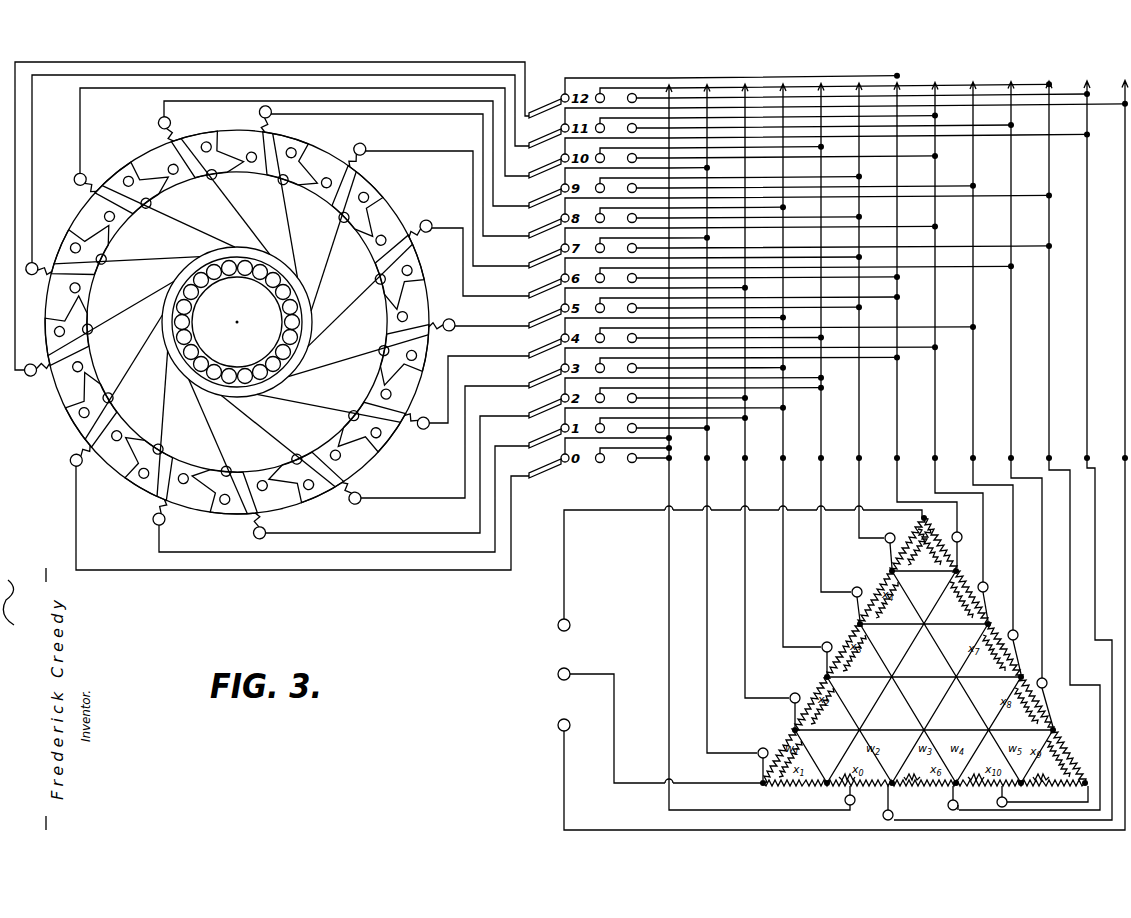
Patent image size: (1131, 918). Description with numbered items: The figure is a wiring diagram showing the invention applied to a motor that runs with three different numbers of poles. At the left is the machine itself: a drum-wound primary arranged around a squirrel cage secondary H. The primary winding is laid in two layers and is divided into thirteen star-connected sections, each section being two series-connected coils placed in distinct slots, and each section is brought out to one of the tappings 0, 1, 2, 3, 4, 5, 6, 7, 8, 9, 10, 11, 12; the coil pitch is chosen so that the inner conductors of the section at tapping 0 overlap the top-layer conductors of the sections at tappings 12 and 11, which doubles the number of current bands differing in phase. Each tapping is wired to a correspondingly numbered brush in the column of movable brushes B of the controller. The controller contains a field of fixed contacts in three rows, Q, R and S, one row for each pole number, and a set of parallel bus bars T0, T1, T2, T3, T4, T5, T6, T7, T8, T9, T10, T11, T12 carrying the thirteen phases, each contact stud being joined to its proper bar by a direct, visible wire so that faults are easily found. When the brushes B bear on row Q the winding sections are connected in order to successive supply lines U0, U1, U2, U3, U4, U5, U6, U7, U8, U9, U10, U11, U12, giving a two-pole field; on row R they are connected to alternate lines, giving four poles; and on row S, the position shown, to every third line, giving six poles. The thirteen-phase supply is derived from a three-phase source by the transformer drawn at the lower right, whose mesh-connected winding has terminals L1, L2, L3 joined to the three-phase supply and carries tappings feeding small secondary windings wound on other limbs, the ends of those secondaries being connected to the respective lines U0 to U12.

The tapping 0 is at (100, 367).
The tapping 1 is at (131, 426).
The tapping 2 is at (198, 462).
The tapping 3 is at (265, 468).
The tapping 4 is at (329, 440).
The tapping 5 is at (376, 385).
The tapping 6 is at (385, 315).
The tapping 7 is at (364, 247).
The tapping 8 is at (315, 196).
The tapping 9 is at (248, 174).
The tapping 10 is at (178, 186).
The tapping 11 is at (122, 229).
The tapping 12 is at (94, 299).
The squirrel cage secondary H is at (237, 322).
The movable brushes B is at (726, 550).
The row of fixed contacts S is at (564, 291).
The row of fixed contacts R is at (598, 292).
The row of fixed contacts Q is at (630, 292).
The transformer terminal L1 is at (544, 725).
The transformer terminal L2 is at (640, 724).
The transformer terminal L3 is at (544, 626).
The bus bar T0 is at (758, 447).
The bus bar T1 is at (730, 419).
The bus bar T2 is at (765, 391).
The bus bar T3 is at (800, 365).
The bus bar T4 is at (834, 338).
The bus bar T5 is at (859, 310).
The bus bar T6 is at (914, 307).
The bus bar T7 is at (946, 332).
The bus bar T8 is at (980, 356).
The bus bar T9 is at (1014, 380).
The bus bar T10 is at (1029, 445).
The bus bar T11 is at (1003, 450).
The bus bar T12 is at (846, 456).
The polyphase supply line U0 is at (843, 810).
The polyphase supply line U1 is at (750, 759).
The polyphase supply line U2 is at (784, 704).
The polyphase supply line U3 is at (817, 651).
The polyphase supply line U4 is at (847, 598).
The polyphase supply line U5 is at (878, 550).
The polyphase supply line U6 is at (967, 542).
The polyphase supply line U7 is at (993, 594).
The polyphase supply line U8 is at (1023, 647).
The polyphase supply line U9 is at (1051, 697).
The polyphase supply line U10 is at (1028, 799).
The polyphase supply line U11 is at (940, 808).
The polyphase supply line U12 is at (884, 812).